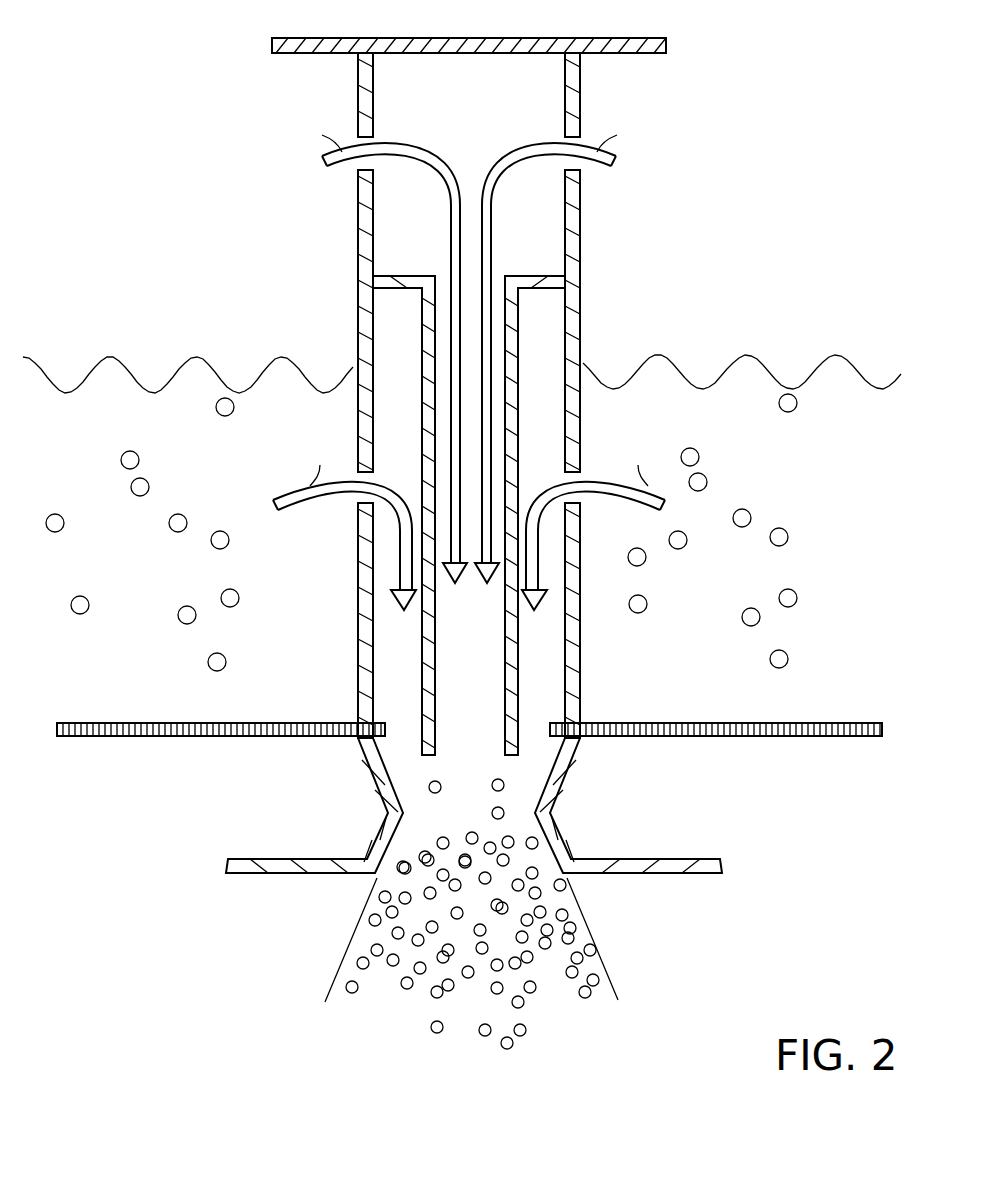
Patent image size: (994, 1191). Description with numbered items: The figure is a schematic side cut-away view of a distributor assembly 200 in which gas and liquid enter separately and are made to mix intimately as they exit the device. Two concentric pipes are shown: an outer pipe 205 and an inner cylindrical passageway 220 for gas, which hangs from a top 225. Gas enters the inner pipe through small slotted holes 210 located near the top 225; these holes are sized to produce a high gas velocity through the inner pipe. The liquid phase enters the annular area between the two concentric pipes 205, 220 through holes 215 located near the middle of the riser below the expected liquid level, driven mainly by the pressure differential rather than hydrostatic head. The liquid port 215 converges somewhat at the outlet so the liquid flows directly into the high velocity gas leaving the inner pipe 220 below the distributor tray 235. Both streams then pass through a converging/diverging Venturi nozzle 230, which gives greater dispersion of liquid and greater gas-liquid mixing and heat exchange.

The distributor assembly 200 is at (228, 208).
The outer pipe 205 is at (358, 243).
The gas passageway holes 210 is at (365, 167).
The liquid passageway holes 215 is at (362, 497).
The cylindrical gas passageway (inner pipe) 220 is at (428, 368).
The top 225 is at (530, 38).
The Venturi nozzle 230 is at (597, 750).
The distributor tray 235 is at (810, 736).